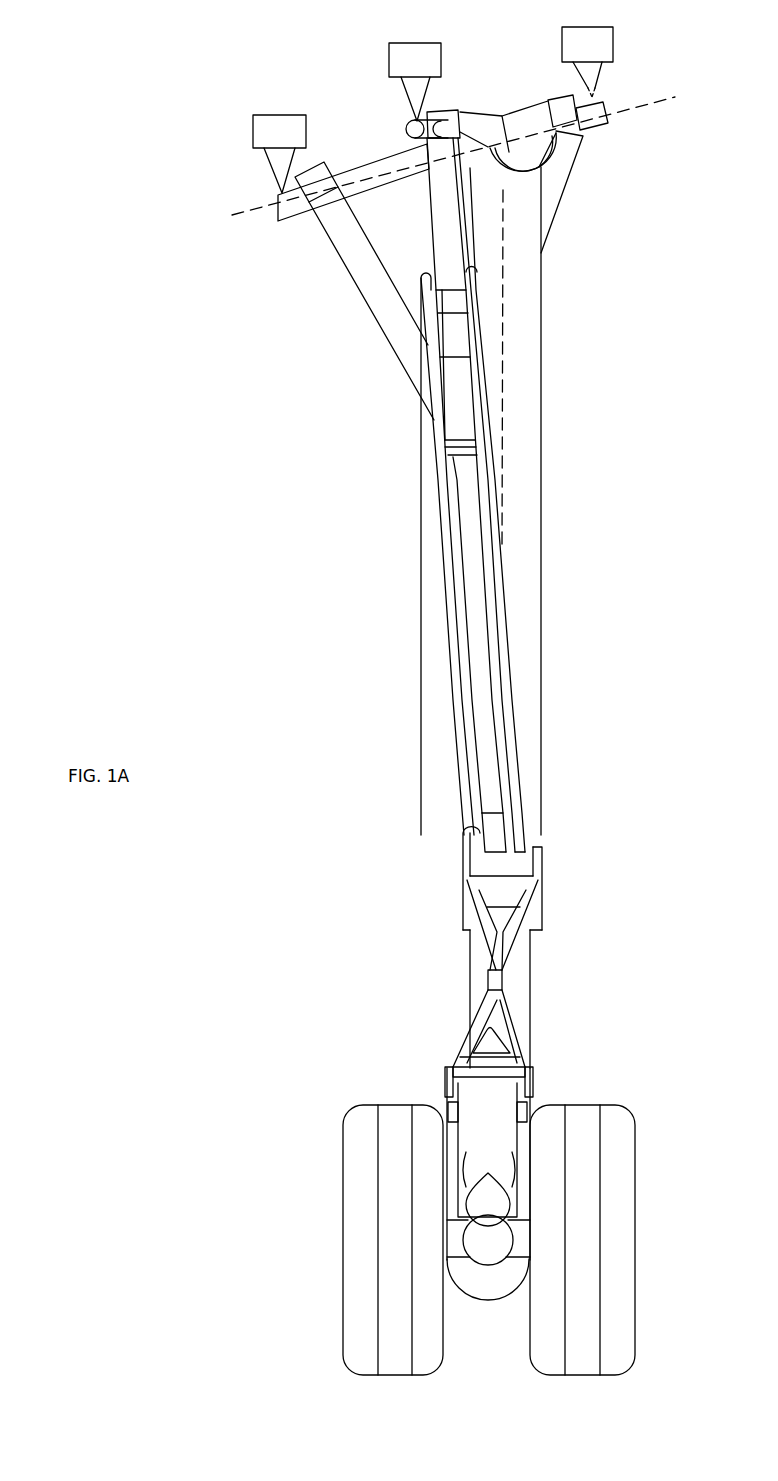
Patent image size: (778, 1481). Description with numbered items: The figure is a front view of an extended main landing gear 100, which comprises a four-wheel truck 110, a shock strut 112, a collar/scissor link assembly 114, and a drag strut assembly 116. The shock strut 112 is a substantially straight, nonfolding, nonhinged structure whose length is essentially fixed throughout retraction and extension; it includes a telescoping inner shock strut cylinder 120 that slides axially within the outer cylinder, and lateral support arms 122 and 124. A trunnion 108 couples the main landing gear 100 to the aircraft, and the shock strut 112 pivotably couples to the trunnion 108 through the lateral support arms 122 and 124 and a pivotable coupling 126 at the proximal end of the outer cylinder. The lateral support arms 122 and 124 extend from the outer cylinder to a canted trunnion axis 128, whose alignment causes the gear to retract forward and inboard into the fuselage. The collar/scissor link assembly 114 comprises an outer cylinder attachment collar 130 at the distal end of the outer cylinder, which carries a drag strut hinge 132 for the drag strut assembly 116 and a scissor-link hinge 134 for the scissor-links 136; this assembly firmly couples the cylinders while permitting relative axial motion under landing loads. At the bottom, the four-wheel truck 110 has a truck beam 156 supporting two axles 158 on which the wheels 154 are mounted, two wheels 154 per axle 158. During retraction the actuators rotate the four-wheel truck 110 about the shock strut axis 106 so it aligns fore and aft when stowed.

The main landing gear 100 is at (692, 226).
The shock strut axis 106 is at (544, 369).
The trunnion 108 is at (391, 158).
The four-wheel truck 110 is at (348, 1075).
The shock strut 112 is at (535, 694).
The collar/scissor link assembly 114 is at (505, 980).
The drag strut assembly 116 is at (455, 648).
The inner shock strut cylinder 120 is at (470, 989).
The lateral support arm 122 is at (399, 365).
The lateral support arm 124 is at (554, 212).
The pivotable coupling 126 is at (527, 150).
The trunnion axis 128 is at (252, 208).
The outer cylinder attachment collar 130 is at (546, 917).
The drag strut hinge 132 is at (528, 835).
The scissor-link hinge 134 is at (539, 880).
The scissor-links 136 is at (467, 1037).
The wheels 154 is at (343, 1228).
The truck beam 156 is at (478, 1296).
The axles 158 is at (522, 1262).